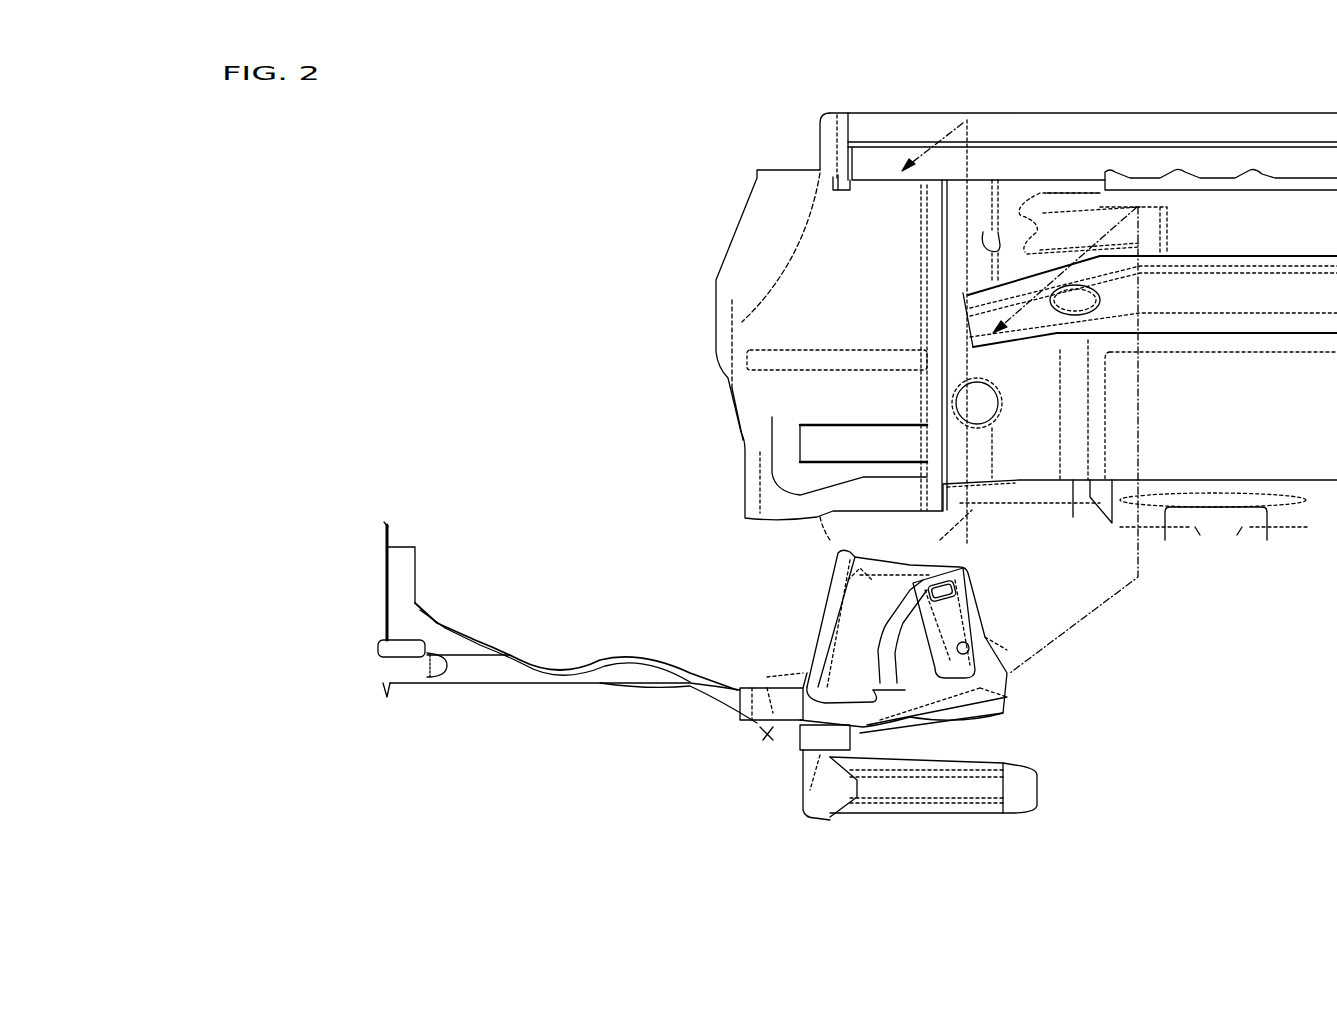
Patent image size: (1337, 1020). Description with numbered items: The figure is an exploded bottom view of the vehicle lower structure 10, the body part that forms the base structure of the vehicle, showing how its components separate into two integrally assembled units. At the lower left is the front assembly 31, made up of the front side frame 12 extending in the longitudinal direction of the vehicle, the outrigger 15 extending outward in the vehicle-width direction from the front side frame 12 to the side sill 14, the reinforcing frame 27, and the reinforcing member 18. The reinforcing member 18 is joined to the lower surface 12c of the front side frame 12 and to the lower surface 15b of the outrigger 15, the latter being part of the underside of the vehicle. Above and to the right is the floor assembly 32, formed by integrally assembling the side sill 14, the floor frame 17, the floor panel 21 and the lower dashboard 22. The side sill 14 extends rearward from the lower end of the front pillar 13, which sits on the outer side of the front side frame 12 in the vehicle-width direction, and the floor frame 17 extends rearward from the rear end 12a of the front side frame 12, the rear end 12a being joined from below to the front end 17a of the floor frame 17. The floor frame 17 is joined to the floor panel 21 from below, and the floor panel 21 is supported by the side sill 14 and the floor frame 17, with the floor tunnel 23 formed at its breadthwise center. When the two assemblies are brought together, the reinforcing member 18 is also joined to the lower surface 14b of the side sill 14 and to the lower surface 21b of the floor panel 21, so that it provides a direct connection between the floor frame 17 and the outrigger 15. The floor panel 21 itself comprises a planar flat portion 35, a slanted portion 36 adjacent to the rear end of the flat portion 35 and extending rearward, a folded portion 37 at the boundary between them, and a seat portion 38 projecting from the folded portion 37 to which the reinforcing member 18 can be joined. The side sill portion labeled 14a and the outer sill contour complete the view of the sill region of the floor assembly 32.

The vehicle lower structure 10 is at (700, 142).
The front side frame 12 is at (597, 688).
The rear end of the front side frame 12a is at (952, 722).
The lower surface of the front side frame 12c is at (993, 722).
The front pillar 13 is at (828, 138).
The side sill 14 is at (1140, 114).
The side sill outer 14a is at (856, 147).
The lower surface of the side sill 14b is at (977, 160).
The outrigger 15 is at (850, 635).
The lower surface of the outrigger 15b is at (870, 590).
The floor frame 17 is at (1190, 292).
The front end of the floor frame 17a is at (947, 375).
The reinforcing member 18 is at (965, 607).
The floor panel 21 is at (1195, 198).
The lower surface of the floor panel 21b is at (1030, 190).
The lower dashboard 22 is at (745, 340).
The floor tunnel 23 is at (1090, 467).
The reinforcing frame 27 is at (930, 790).
The front assembly 31 is at (1030, 692).
The floor assembly 32 is at (735, 213).
The flat portion 35 is at (968, 213).
The slanted portion 36 is at (1100, 300).
The folded portion 37 is at (1040, 246).
The seat portion 38 is at (983, 240).